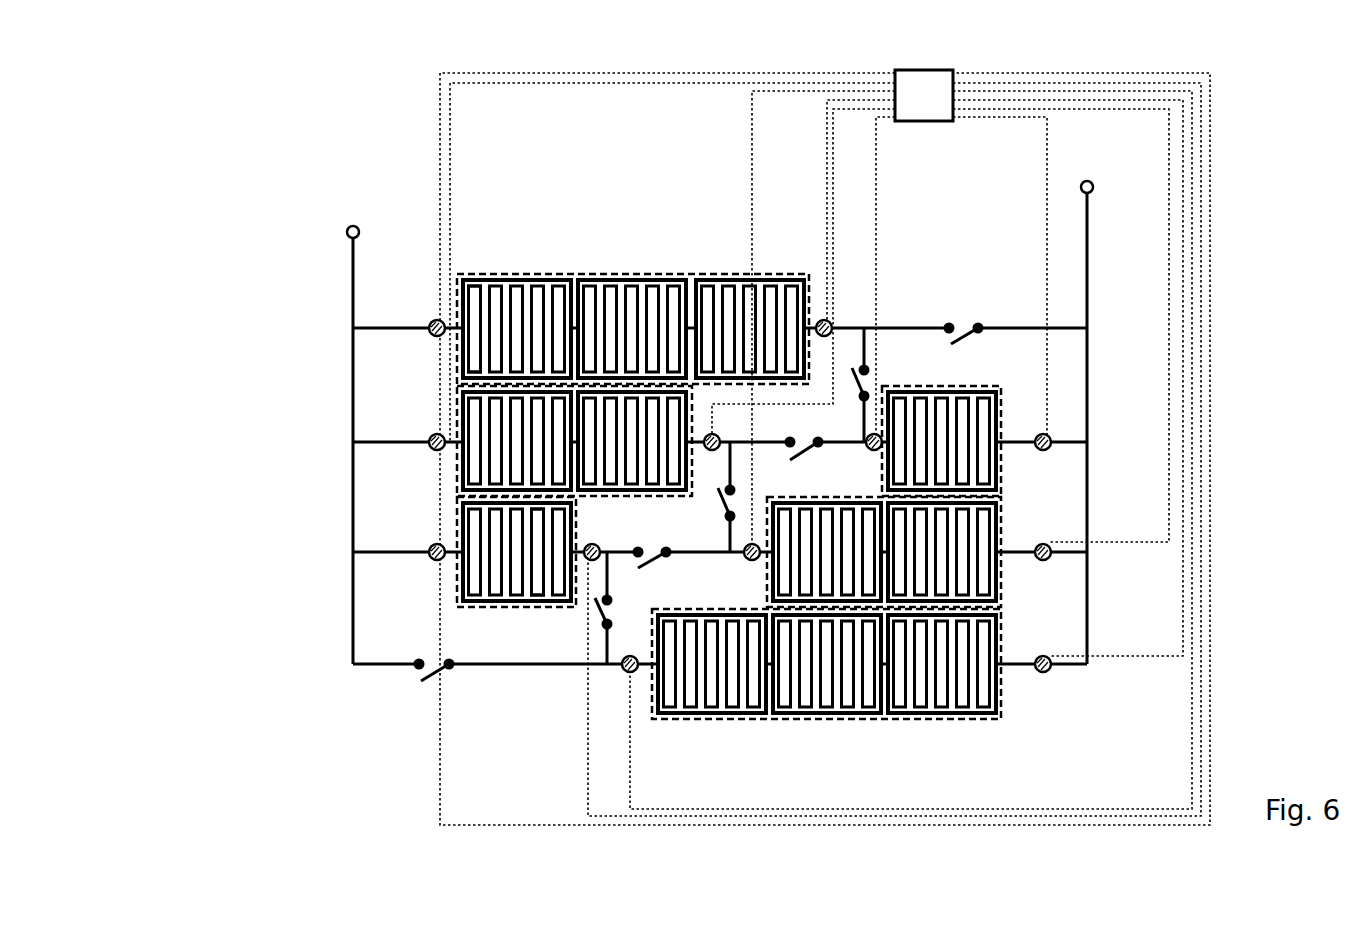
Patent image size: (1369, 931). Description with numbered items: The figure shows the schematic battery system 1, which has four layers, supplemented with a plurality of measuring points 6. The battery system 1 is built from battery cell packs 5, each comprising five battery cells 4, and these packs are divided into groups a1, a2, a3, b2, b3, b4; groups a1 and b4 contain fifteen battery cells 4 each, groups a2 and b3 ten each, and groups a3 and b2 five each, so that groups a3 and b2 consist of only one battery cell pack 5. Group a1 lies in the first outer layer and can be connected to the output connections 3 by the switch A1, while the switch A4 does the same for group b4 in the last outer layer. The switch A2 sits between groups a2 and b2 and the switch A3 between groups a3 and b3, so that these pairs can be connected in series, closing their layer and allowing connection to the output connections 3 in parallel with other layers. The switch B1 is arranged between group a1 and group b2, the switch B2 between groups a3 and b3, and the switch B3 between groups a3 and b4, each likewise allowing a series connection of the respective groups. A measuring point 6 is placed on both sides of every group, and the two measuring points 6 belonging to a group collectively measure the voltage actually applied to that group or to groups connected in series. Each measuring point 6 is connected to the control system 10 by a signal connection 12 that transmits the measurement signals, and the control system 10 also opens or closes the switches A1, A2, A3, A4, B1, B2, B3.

The battery system 1 is at (236, 196).
The output connections 3 is at (347, 226).
The battery cells 4 is at (477, 296).
The battery cell packs 5 is at (703, 277).
The measuring points 6 is at (1039, 434).
The control system 10 is at (924, 95).
The signal connection 12 is at (1045, 189).
The group a1 is at (691, 482).
The group a2 is at (455, 405).
The group a3 is at (455, 590).
The group b2 is at (1003, 425).
The group b3 is at (1003, 590).
The group b4 is at (935, 719).
The switch A1 is at (965, 344).
The switch A2 is at (804, 460).
The switch A3 is at (656, 567).
The switch A4 is at (425, 685).
The switch B1 is at (852, 385).
The switch B2 is at (714, 497).
The switch B3 is at (593, 608).